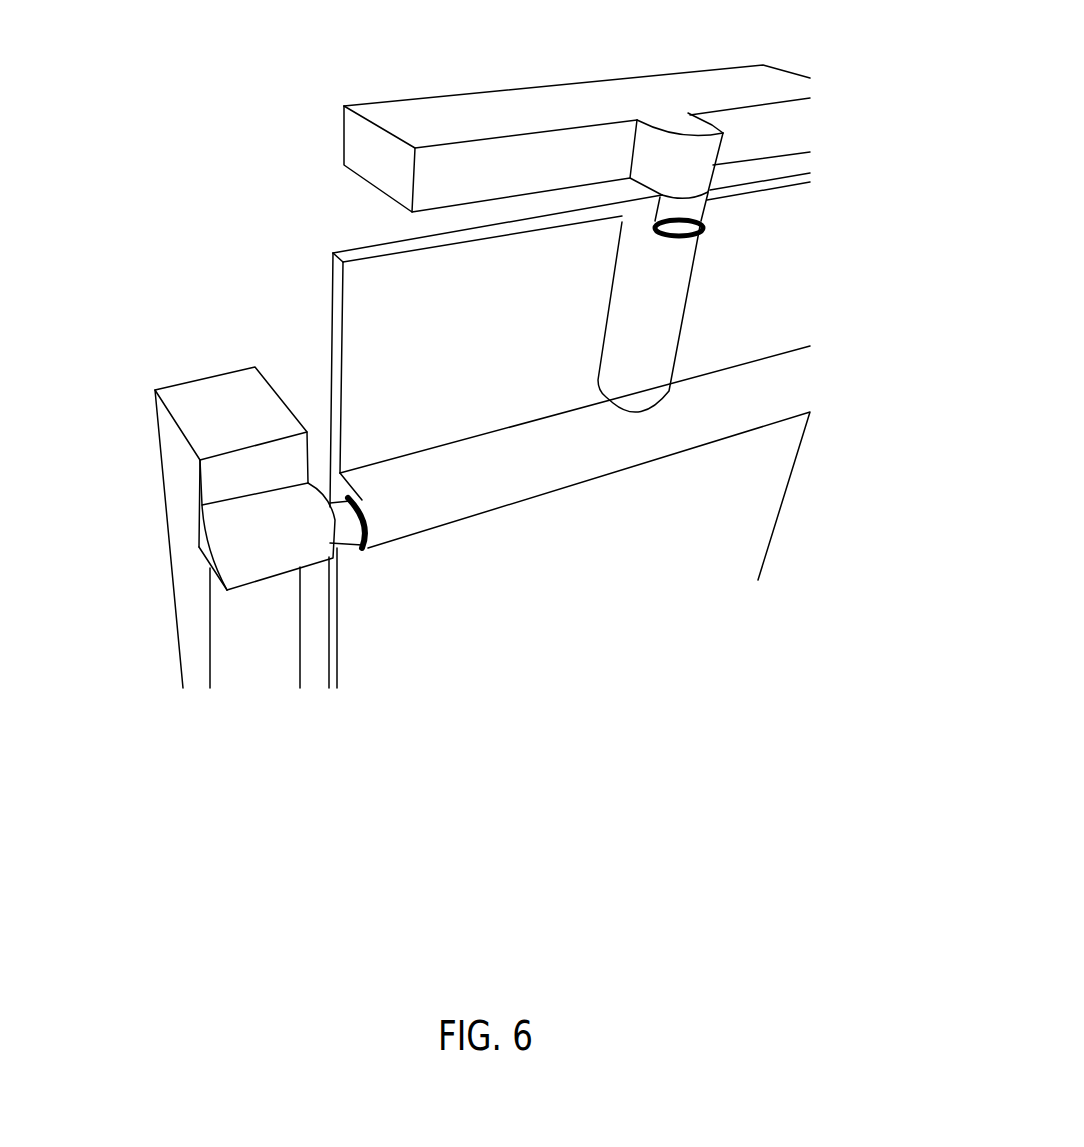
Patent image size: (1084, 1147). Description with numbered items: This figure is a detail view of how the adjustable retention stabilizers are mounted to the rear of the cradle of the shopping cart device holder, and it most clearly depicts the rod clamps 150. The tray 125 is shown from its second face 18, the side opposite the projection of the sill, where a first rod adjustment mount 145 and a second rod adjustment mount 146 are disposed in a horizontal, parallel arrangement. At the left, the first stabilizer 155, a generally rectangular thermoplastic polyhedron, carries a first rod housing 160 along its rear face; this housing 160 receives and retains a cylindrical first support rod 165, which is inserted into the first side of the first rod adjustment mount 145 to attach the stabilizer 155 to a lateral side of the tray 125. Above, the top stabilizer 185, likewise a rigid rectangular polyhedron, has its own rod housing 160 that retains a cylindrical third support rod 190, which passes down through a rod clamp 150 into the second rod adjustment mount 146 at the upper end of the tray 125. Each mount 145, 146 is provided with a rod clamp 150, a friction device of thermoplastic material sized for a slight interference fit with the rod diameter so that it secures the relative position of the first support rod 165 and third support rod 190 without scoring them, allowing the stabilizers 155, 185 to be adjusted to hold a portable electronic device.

The second face 18 is at (533, 430).
The tray 125 is at (367, 255).
The first rod adjustment mount 145 is at (475, 497).
The second rod adjustment mount 146 is at (670, 307).
The rod clamp 150 is at (701, 236).
The first stabilizer 155 is at (182, 435).
The first rod housing 160 is at (707, 151).
The first support rod 165 is at (334, 512).
The top stabilizer 185 is at (485, 106).
The third support rod 190 is at (693, 211).